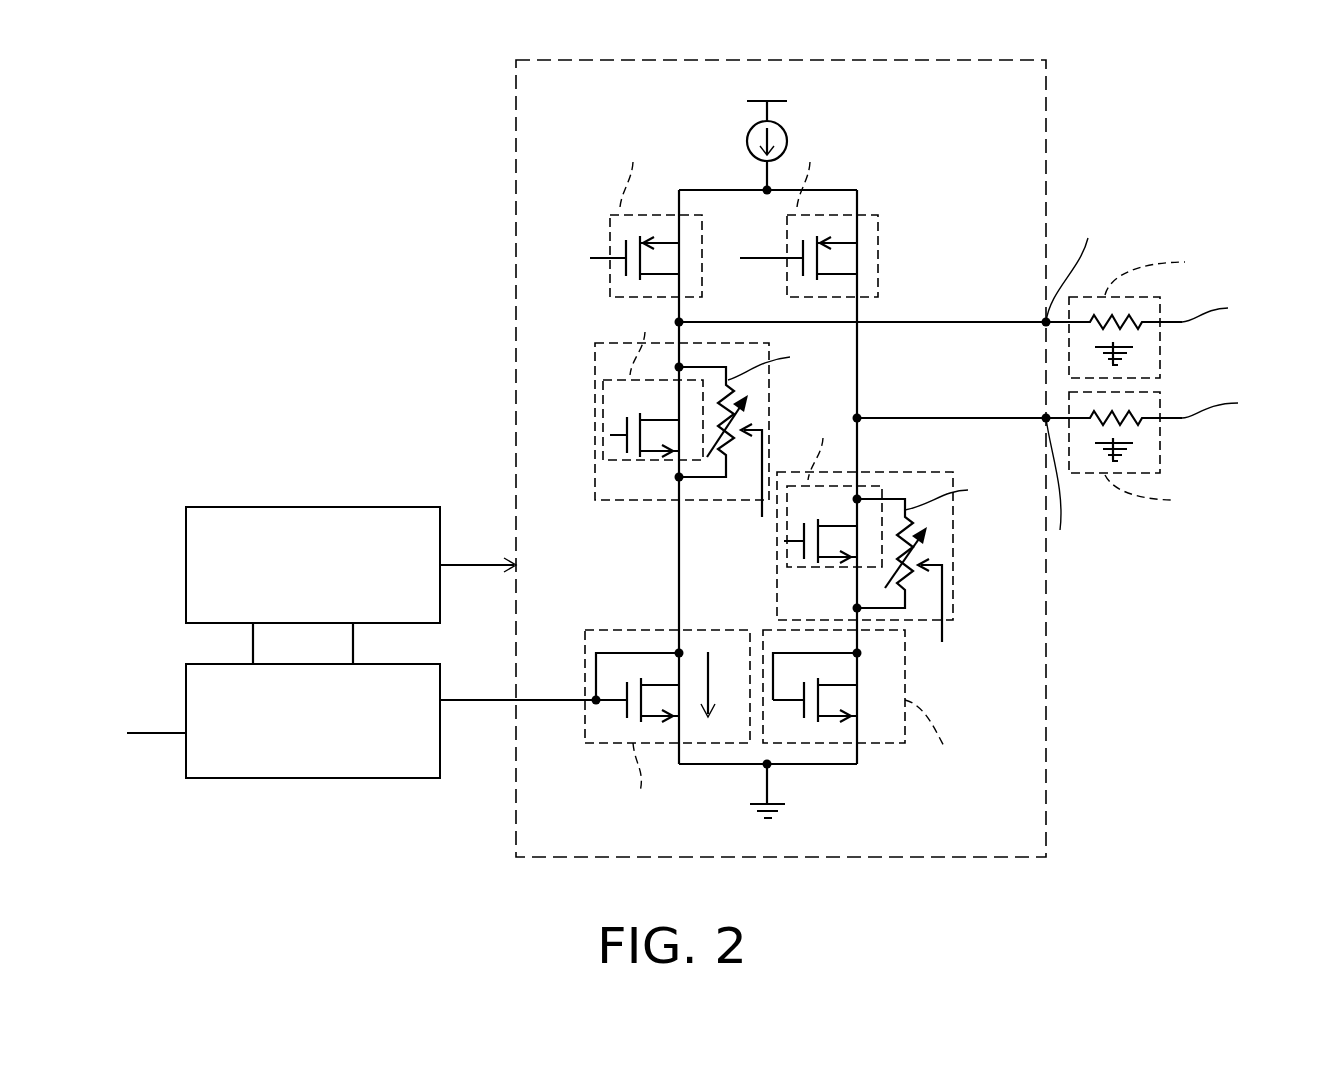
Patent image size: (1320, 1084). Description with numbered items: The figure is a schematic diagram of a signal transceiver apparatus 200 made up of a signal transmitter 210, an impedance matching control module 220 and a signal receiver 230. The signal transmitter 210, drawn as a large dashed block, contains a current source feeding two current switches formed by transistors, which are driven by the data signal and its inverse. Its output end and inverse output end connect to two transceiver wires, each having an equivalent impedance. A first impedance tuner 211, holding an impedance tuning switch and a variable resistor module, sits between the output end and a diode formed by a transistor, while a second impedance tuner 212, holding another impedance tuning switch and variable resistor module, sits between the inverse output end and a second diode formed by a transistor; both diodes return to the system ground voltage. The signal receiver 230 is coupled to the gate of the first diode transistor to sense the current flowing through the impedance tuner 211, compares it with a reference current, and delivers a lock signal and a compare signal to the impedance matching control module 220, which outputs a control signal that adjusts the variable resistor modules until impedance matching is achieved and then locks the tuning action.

The signal transceiver apparatus 200 is at (1182, 886).
The signal transmitter 210 is at (1046, 113).
The impedance tuner 211 is at (620, 505).
The impedance tuner 212 is at (953, 545).
The impedance matching control module 220 is at (313, 507).
The signal receiver 230 is at (325, 778).